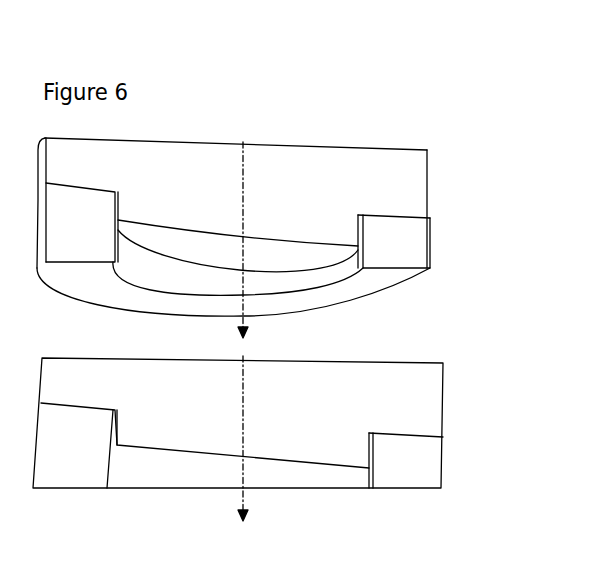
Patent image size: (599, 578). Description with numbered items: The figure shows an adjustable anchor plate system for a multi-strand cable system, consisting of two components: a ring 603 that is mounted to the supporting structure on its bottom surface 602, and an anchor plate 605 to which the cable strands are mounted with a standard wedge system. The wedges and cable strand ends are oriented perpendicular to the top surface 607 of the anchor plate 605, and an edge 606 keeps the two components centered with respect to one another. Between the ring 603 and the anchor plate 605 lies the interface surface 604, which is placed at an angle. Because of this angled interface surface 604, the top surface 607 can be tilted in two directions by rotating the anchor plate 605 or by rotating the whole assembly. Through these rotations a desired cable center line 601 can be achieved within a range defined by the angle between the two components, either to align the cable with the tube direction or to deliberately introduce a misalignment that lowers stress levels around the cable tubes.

The cable center line 601 is at (243, 257).
The bottom surface 602 is at (375, 287).
The ring 603 is at (395, 248).
The interface surface 604 is at (395, 218).
The anchor plate 605 is at (395, 185).
The edge 606 is at (117, 208).
The top surface 607 is at (158, 143).